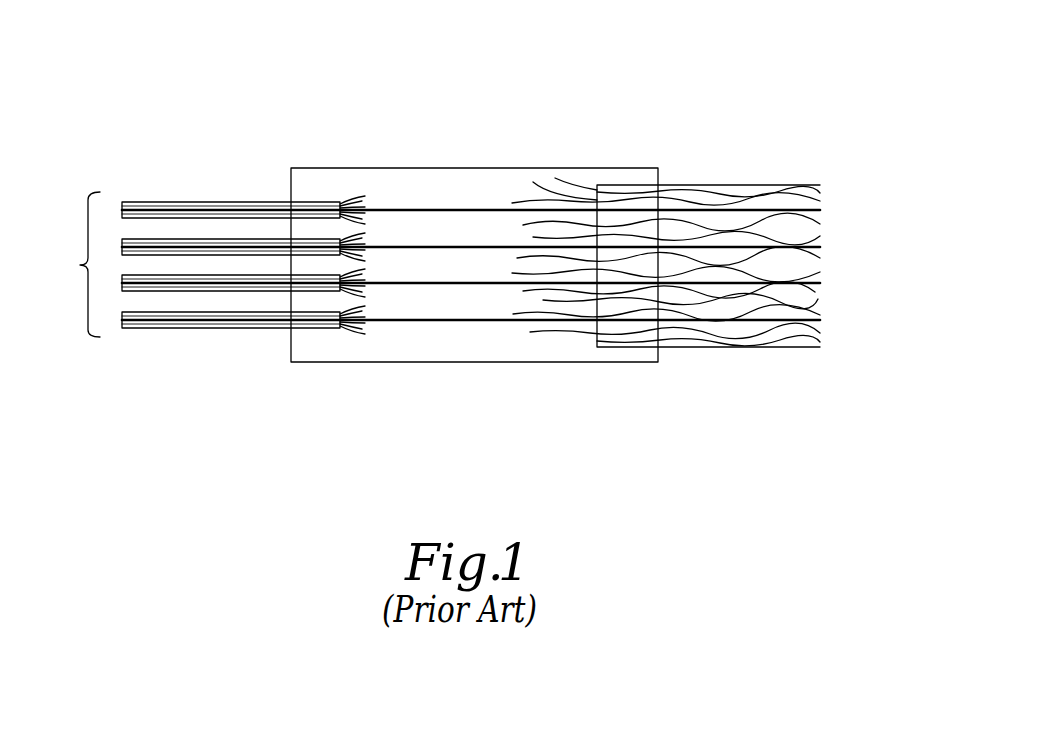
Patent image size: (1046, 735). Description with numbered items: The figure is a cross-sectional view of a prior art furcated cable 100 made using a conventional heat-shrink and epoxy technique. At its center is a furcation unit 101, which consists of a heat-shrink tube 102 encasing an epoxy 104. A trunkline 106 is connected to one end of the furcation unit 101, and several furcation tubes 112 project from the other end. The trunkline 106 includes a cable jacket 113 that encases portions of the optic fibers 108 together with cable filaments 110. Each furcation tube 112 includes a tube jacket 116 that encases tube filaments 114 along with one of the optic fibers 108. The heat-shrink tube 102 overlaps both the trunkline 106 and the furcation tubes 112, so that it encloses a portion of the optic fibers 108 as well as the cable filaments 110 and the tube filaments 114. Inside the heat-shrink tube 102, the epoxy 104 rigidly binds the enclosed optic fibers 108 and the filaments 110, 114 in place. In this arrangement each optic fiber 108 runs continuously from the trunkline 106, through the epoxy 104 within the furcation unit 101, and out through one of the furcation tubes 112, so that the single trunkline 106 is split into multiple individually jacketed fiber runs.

The furcated cable 100 is at (618, 55).
The furcation unit 101 is at (382, 370).
The heat-shrink tube 102 is at (367, 168).
The epoxy 104 is at (453, 182).
The trunkline 106 is at (740, 372).
The optic fibers 108 is at (250, 210).
The cable filaments 110 is at (533, 182).
The furcation tubes 112 is at (80, 266).
The cable jacket 113 is at (727, 185).
The tube filaments 114 is at (345, 200).
The tube jacket 116 is at (147, 313).